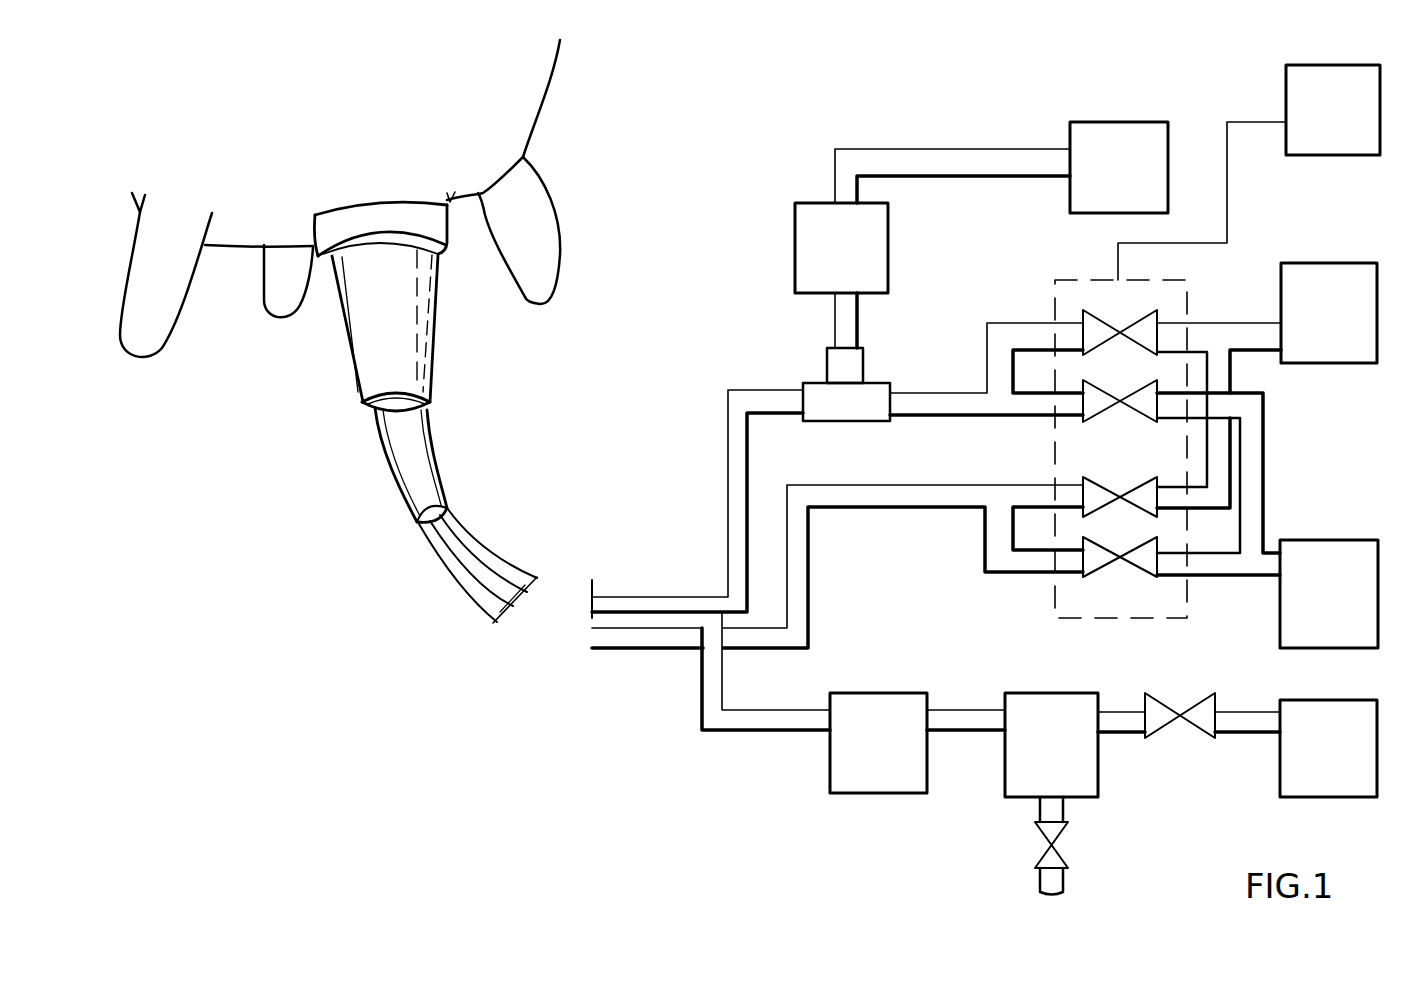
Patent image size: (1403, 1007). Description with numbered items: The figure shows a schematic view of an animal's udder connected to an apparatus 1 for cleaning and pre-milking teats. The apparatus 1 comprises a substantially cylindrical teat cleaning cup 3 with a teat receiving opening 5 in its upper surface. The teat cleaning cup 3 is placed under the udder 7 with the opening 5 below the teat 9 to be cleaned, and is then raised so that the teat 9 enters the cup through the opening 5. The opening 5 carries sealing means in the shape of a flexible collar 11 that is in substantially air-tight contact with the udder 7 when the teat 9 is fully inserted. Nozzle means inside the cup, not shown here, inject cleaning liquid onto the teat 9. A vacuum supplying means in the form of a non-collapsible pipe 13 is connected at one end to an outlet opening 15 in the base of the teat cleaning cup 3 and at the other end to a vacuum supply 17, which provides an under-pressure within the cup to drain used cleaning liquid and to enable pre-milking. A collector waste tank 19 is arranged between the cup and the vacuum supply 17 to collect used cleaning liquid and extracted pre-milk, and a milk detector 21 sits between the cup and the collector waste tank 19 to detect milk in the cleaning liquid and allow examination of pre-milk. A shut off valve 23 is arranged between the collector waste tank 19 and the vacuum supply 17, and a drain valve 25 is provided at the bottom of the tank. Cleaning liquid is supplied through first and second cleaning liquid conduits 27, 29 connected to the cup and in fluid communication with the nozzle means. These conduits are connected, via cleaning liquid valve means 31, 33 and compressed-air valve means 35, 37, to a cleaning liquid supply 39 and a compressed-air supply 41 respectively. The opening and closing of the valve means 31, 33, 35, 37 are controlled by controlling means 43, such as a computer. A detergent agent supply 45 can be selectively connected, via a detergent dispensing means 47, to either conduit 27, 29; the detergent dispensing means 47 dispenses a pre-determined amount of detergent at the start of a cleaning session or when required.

The apparatus 1 is at (692, 213).
The teat cleaning cup 3 is at (414, 352).
The teat receiving opening 5 is at (373, 203).
The udder 7 is at (527, 82).
The teat 9 is at (275, 287).
The flexible collar 11 is at (340, 227).
The non-collapsible pipe 13 is at (713, 700).
The outlet opening 15 is at (370, 417).
The vacuum supply 17 is at (1309, 768).
The collector waste tank 19 is at (1033, 765).
The milk detector 21 is at (859, 763).
The shut off valve 23 is at (1200, 720).
The drain valve 25 is at (1055, 832).
The first cleaning liquid conduit 27 is at (720, 603).
The second cleaning liquid conduit 29 is at (644, 636).
The cleaning liquid valve means 31 is at (1158, 325).
The cleaning liquid valve means 33 is at (1140, 490).
The compressed-air valve means 35 is at (1093, 403).
The compressed-air valve means 37 is at (1095, 565).
The cleaning liquid supply 39 is at (1310, 333).
The compressed-air supply 41 is at (1310, 614).
The controlling means 43 is at (1314, 130).
The detergent agent supply 45 is at (1100, 187).
The detergent dispensing means 47 is at (822, 268).